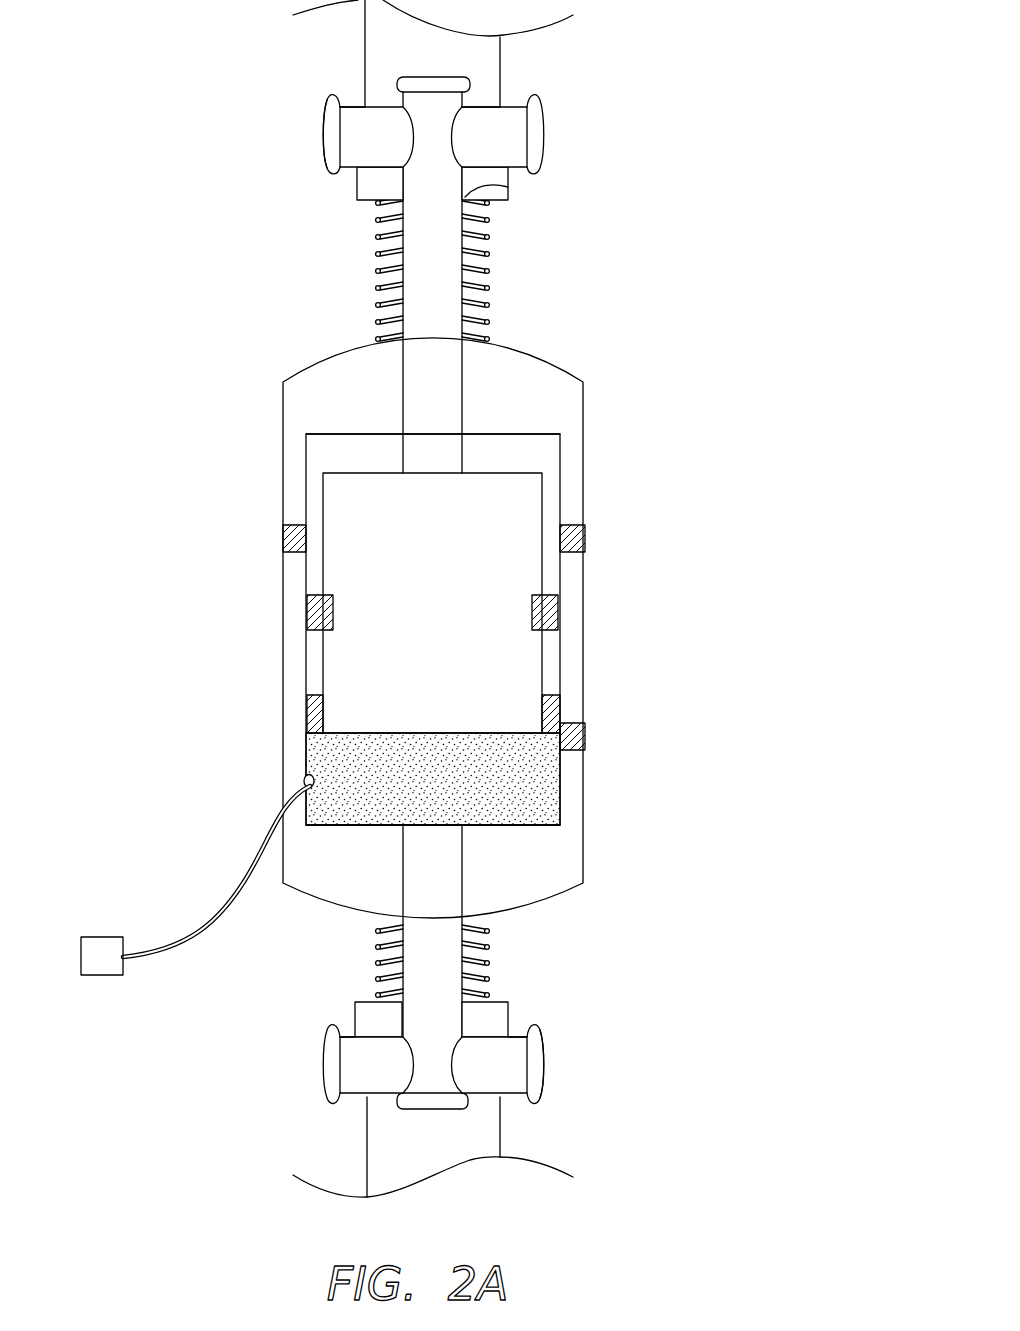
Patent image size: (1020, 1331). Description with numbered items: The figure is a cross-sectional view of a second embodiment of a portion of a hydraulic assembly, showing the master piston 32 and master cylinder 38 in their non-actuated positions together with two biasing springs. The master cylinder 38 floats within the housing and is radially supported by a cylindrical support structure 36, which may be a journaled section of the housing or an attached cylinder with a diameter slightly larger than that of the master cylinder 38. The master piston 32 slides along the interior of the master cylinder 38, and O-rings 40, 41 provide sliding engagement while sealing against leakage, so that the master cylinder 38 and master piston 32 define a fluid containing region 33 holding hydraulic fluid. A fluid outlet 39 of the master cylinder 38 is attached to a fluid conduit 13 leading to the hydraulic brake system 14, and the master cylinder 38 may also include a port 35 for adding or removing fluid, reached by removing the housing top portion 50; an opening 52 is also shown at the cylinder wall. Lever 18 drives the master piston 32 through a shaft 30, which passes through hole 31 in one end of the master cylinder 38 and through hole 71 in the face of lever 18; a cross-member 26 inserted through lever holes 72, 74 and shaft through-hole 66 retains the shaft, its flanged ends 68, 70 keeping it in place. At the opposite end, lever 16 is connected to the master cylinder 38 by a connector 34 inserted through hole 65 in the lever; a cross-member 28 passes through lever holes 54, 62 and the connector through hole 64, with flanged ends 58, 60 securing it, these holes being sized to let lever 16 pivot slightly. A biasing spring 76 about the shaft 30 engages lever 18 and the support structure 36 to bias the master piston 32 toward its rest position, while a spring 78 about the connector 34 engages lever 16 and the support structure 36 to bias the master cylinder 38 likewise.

The fluid conduit 13 is at (205, 900).
The hydraulic brake system 14 is at (102, 956).
The lever 16 is at (412, 1154).
The lever 18 is at (412, 56).
The cross-member 26 is at (378, 137).
The cross-member 28 is at (490, 1073).
The shaft 30 is at (450, 370).
The hole 31 is at (403, 435).
The master piston 32 is at (450, 634).
The fluid containing region 33 is at (540, 772).
The connector 34 is at (450, 882).
The port 35 is at (572, 722).
The support structure 36 is at (585, 445).
The master cylinder 38 is at (545, 450).
The fluid outlet 39 is at (308, 782).
The O-ring 40 is at (545, 595).
The O-ring 41 is at (315, 695).
The housing top portion 50 is at (295, 525).
The port 52 is at (300, 790).
The lever hole 54 is at (507, 1037).
The flanged end 58 is at (542, 1083).
The flanged end 60 is at (327, 1085).
The lever hole 62 is at (352, 1032).
The through hole 64 is at (462, 1028).
The hole 65 is at (397, 993).
The through-hole 66 is at (460, 83).
The flanged end 68 is at (543, 132).
The flanged end 70 is at (323, 130).
The hole 71 is at (512, 170).
The lever hole 72 is at (363, 107).
The lever hole 74 is at (512, 170).
The biasing spring 76 is at (487, 277).
The spring 78 is at (380, 932).